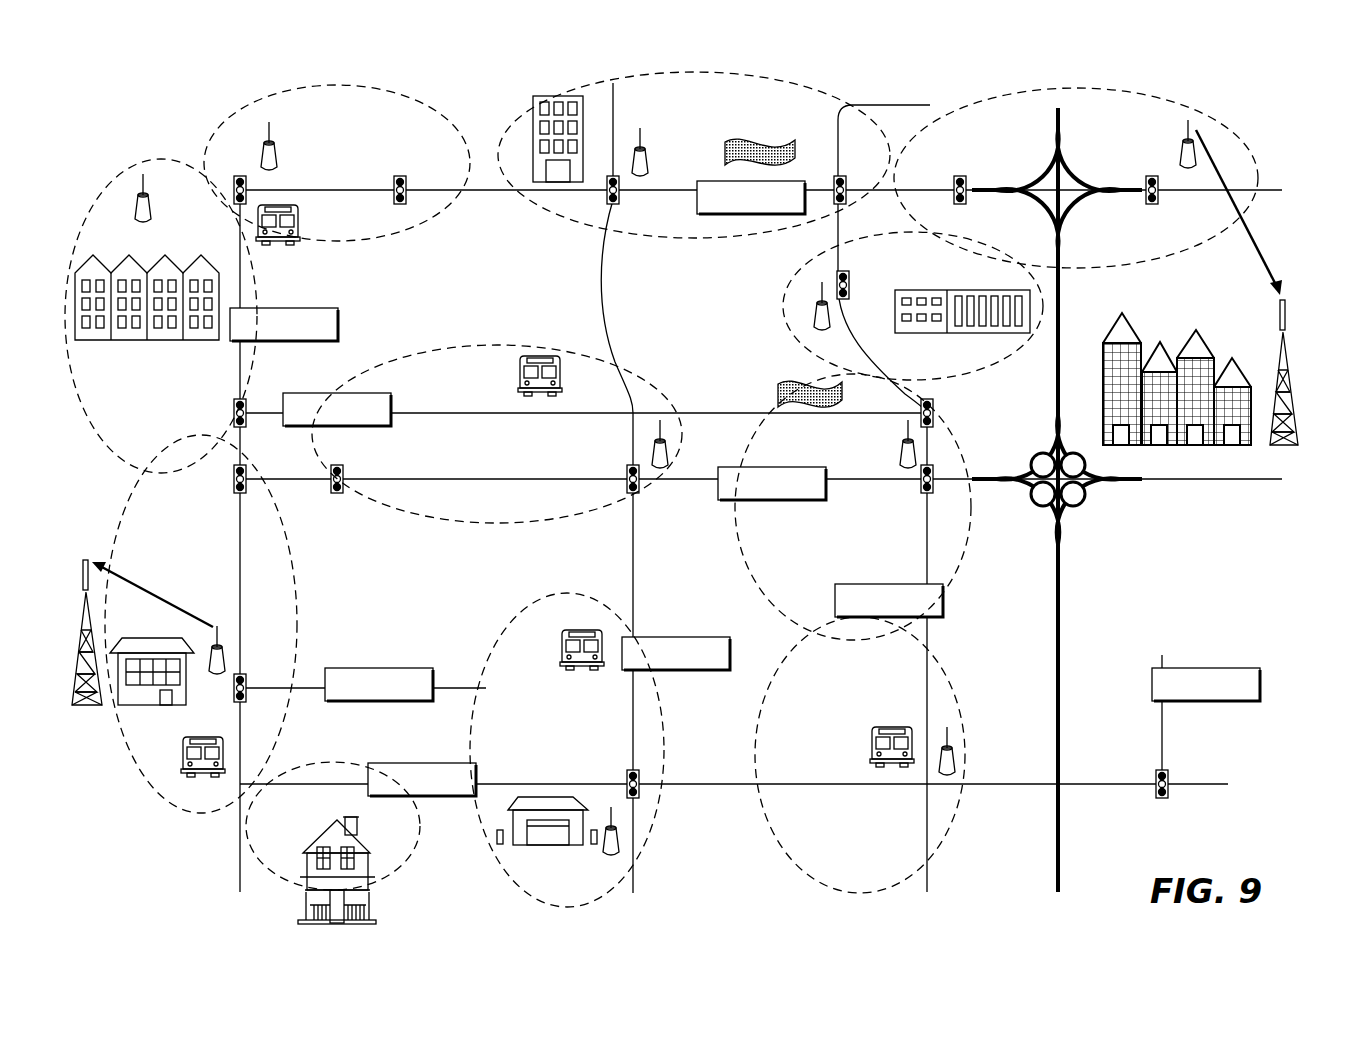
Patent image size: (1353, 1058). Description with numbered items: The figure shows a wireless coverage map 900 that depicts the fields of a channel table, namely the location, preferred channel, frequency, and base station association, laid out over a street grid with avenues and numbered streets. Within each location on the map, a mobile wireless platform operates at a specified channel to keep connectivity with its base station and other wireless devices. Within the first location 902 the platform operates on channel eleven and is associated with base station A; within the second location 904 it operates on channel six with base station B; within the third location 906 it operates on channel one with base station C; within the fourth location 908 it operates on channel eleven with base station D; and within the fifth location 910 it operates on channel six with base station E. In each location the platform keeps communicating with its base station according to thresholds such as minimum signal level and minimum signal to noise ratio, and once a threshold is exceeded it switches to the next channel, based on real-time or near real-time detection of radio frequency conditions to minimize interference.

The wireless coverage map 900 is at (703, 510).
The location 1 902 is at (468, 345).
The location 2 904 is at (298, 606).
The location 3 906 is at (655, 812).
The location 4 908 is at (233, 115).
The location 5 910 is at (868, 893).